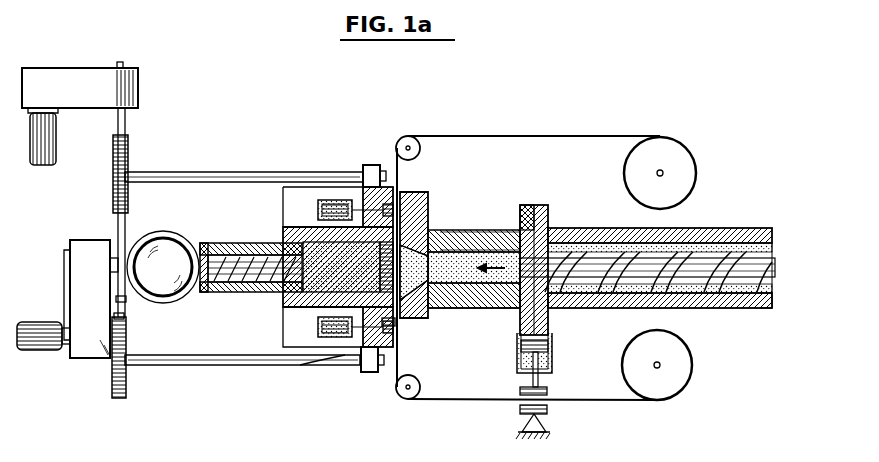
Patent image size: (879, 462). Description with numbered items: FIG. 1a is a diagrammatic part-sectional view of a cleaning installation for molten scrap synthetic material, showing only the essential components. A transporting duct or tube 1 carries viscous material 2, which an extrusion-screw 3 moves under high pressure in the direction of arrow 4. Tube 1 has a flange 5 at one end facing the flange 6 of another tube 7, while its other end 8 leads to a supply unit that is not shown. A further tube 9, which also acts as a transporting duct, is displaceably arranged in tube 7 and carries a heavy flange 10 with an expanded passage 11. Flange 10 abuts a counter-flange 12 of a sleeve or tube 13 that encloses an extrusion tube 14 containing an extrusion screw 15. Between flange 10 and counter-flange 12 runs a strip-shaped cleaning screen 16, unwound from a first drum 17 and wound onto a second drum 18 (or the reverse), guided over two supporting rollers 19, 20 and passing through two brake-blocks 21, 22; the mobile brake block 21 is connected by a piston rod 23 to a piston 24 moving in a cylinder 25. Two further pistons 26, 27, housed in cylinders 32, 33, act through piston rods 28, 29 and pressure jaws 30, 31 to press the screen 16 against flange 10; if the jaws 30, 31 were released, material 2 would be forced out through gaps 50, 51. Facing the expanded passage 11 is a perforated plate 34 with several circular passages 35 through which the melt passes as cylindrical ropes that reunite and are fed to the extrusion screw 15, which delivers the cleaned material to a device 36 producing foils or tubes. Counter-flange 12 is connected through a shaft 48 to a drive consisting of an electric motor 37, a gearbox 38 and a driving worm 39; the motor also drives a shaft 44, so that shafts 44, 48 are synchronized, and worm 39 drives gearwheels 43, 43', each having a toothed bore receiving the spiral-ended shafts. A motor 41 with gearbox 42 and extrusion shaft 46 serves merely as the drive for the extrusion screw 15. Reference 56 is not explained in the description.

The transporting duct or tube 1 is at (730, 229).
The viscous material 2 is at (700, 243).
The extrusion-screw 3 is at (575, 309).
The arrow 4 is at (495, 252).
The flange 5 is at (540, 205).
The flange 6 is at (524, 205).
The tube 7 is at (465, 235).
The other end of tube 8 is at (745, 309).
The tube 9 is at (470, 309).
The heavy flange 10 is at (420, 212).
The expanded passage 11 is at (431, 245).
The counter-flange 12 is at (365, 362).
The sleeve or tube 13 is at (285, 303).
The extrusion tube 14 is at (222, 243).
The extrusion screw 15 is at (225, 292).
The strip-shaped cleaning screen 16 is at (490, 135).
The first drum 17 is at (680, 378).
The second drum 18 is at (678, 150).
The supporting roller 19 is at (408, 399).
The supporting roller 20 is at (406, 136).
The mobile brake block 21 is at (520, 391).
The stationary brake block 22 is at (518, 418).
The piston rod 23 is at (538, 378).
The piston 24 is at (520, 348).
The cylinder 25 is at (553, 350).
The piston 26 is at (326, 200).
The piston 27 is at (325, 336).
The piston rod 28 is at (365, 176).
The piston rod 29 is at (300, 365).
The pressure jaw 30 is at (430, 195).
The pressure jaw 31 is at (396, 322).
The cylinder 32 is at (320, 212).
The cylinder 33 is at (320, 325).
The perforated plate 34 is at (377, 276).
The through circular passages 35 is at (377, 250).
The device 36 is at (163, 232).
The electric motor 37 is at (56, 145).
The gearbox 38 is at (140, 92).
The driving worm 39 is at (122, 302).
The motor 41 is at (36, 322).
The gearbox 42 is at (90, 360).
The gearwheel 43 is at (142, 362).
The gearwheel 43' is at (149, 212).
The shaft 44 is at (200, 366).
The extrusion shaft 46 is at (110, 262).
The shaft 48 is at (236, 171).
The gap 50 is at (415, 192).
The gap 51 is at (412, 330).
The hub 56 is at (163, 282).